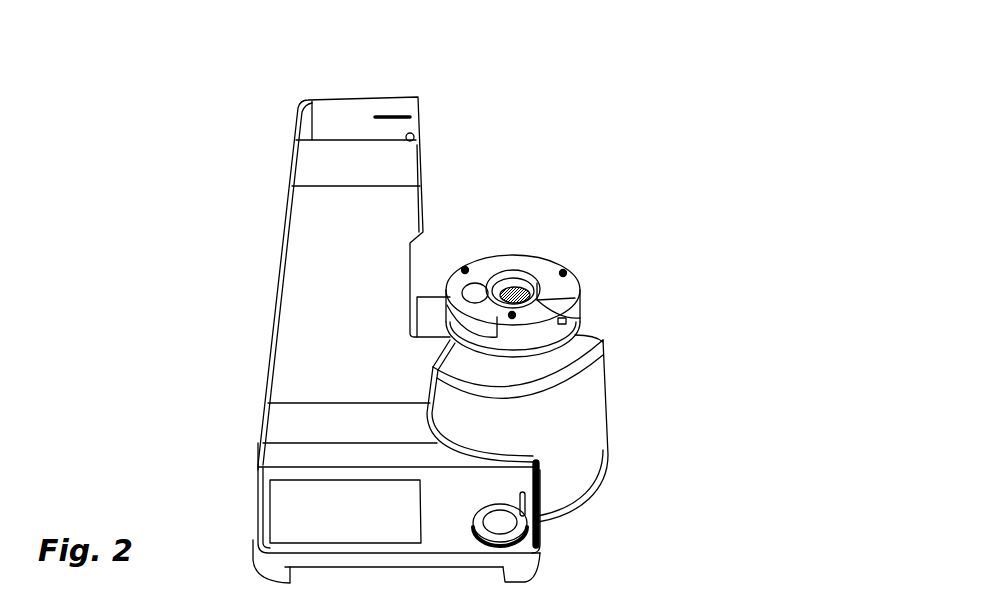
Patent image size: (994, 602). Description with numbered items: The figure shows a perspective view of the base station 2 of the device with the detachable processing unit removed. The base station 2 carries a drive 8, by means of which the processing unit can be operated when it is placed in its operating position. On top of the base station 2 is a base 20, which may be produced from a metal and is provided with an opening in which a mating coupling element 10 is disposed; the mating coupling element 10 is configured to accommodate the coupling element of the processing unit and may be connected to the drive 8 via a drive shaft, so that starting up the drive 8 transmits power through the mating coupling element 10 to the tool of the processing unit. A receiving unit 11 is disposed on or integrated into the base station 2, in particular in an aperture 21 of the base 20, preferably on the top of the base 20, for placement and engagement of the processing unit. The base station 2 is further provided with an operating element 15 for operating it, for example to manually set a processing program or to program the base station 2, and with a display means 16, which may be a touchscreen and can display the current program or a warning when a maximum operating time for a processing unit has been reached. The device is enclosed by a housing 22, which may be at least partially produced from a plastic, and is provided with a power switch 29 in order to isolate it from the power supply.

The base station 2 is at (267, 323).
The drive 8 is at (560, 415).
The mating coupling element 10 is at (578, 348).
The receiving unit 11 is at (478, 292).
The operating element 15 is at (497, 523).
The display means 16 is at (302, 518).
The base 20 is at (535, 272).
The aperture 21 is at (462, 287).
The housing 22 is at (318, 238).
The power switch 29 is at (258, 444).